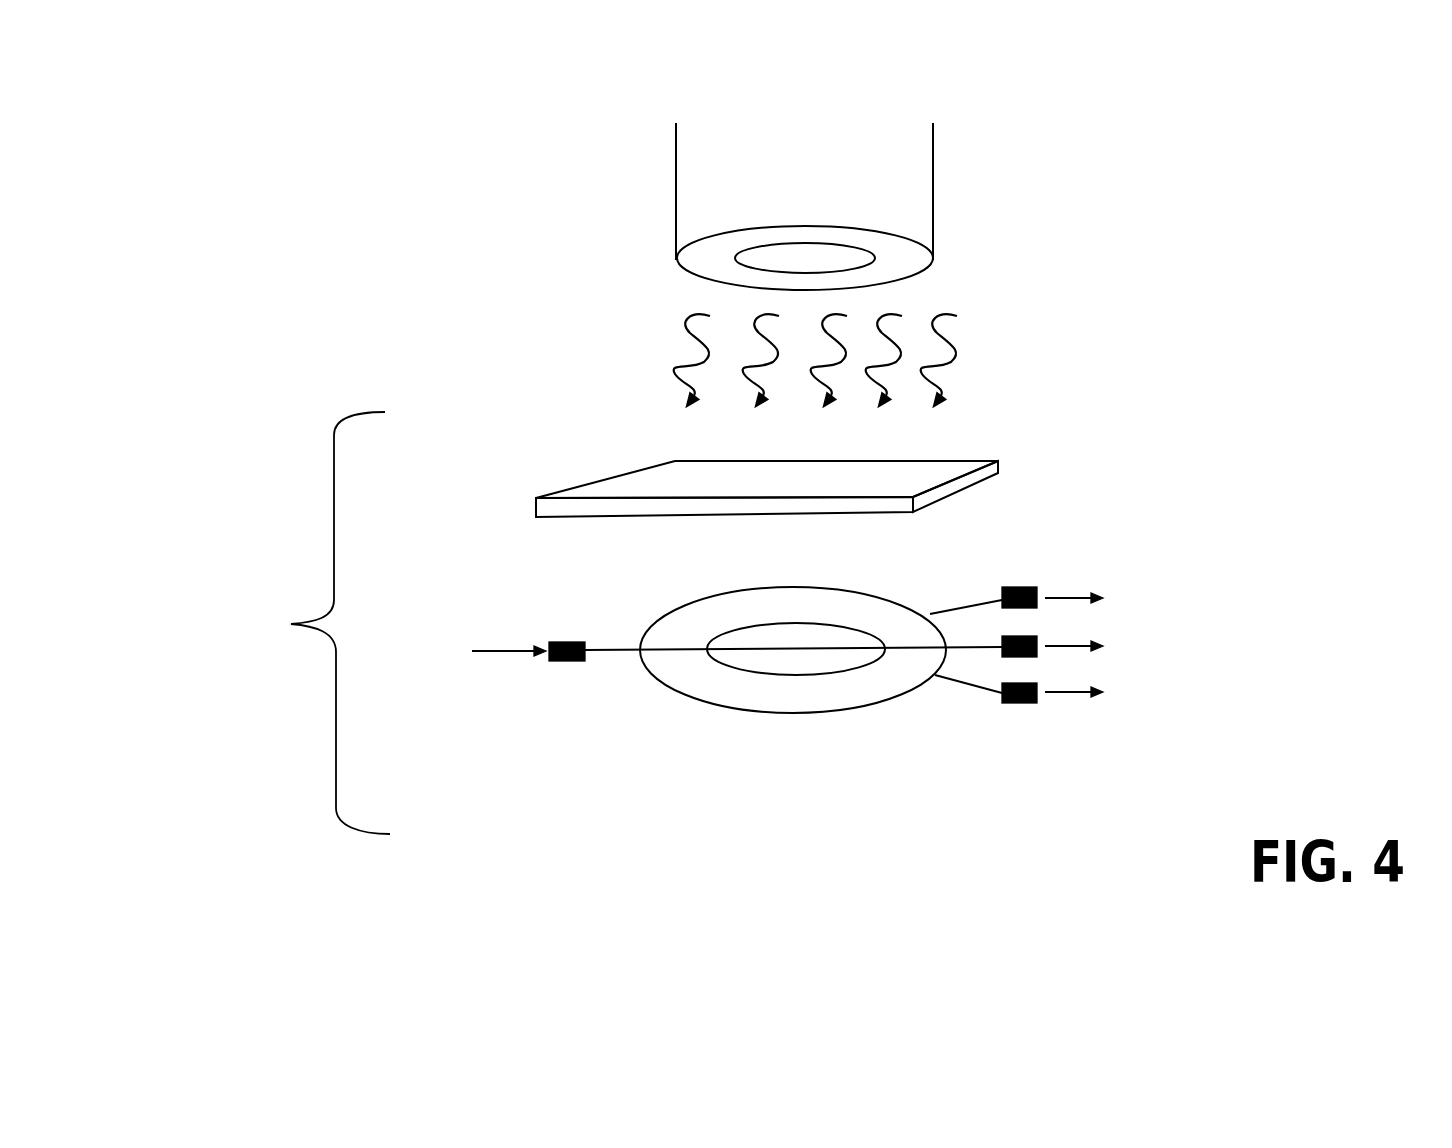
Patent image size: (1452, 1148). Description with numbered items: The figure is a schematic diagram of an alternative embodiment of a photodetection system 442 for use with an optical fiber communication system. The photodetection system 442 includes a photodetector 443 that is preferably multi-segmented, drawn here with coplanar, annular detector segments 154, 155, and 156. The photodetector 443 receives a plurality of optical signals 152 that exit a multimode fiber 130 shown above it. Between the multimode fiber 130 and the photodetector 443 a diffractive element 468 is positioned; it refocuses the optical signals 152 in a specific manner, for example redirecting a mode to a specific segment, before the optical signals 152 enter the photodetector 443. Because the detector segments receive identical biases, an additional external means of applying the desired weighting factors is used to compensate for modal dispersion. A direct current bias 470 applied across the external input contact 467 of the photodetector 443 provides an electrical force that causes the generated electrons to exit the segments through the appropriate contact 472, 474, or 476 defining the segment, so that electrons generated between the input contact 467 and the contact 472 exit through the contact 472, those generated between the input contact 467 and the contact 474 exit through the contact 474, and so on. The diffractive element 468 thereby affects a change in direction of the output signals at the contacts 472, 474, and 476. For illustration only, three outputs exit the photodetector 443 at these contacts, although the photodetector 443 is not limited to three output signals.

The multimode fiber 130 is at (676, 181).
The optical signals 152 is at (668, 345).
The diffractive element 468 is at (603, 478).
The photodetector 443 is at (800, 664).
The detector segment 154 is at (748, 590).
The detector segment 155 is at (710, 700).
The detector segment 156 is at (898, 692).
The external input contact 467 is at (565, 642).
The direct current (DC) bias 470 is at (408, 657).
The contact 472 is at (1020, 587).
The contact 474 is at (1020, 636).
The contact 476 is at (1020, 703).
The photodetection system 442 is at (291, 624).